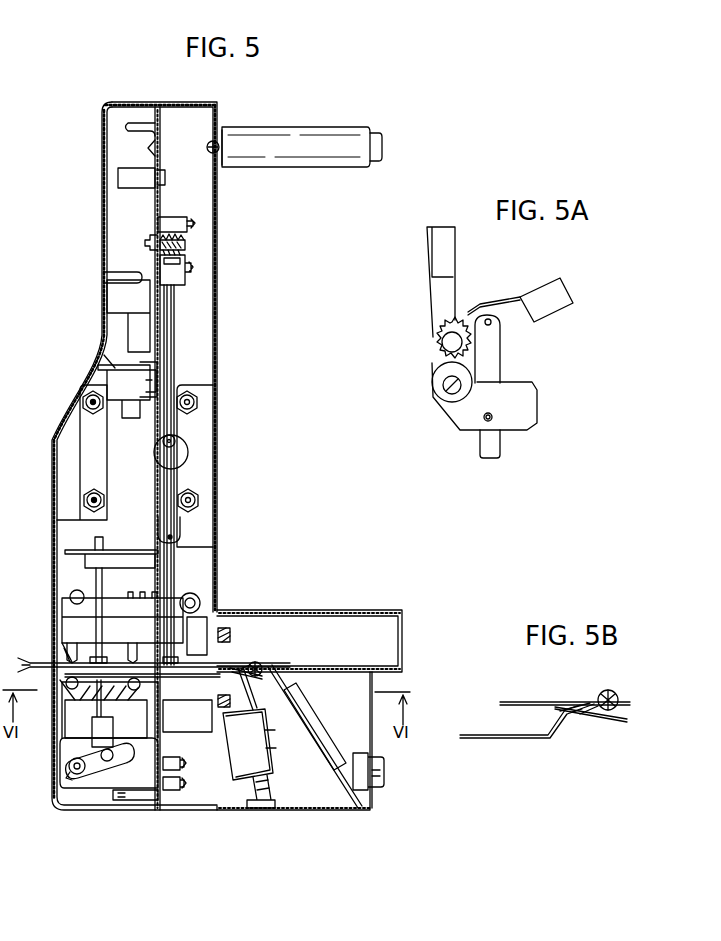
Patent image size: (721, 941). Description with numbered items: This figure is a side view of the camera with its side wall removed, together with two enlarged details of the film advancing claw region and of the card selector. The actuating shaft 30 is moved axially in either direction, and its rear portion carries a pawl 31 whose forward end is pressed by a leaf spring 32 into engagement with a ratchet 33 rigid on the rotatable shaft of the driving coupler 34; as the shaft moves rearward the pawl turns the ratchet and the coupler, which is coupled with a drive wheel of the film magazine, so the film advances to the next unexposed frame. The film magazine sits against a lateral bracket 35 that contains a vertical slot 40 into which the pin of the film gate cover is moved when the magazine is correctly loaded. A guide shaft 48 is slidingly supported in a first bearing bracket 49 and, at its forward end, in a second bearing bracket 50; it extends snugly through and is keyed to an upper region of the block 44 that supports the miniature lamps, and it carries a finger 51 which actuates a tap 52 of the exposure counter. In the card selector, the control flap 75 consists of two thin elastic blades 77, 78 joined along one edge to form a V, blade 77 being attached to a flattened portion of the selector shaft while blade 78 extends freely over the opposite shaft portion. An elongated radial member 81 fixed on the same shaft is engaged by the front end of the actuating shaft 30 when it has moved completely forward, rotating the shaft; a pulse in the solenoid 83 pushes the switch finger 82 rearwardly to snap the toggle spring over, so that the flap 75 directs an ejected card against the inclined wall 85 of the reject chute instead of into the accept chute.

In FIG. 5, the actuating shaft 30 is at (175, 337).
In FIG. 5A, the actuating shaft 30 is at (505, 448).
In FIG. 5A, the pawl 31 is at (488, 326).
In FIG. 5, the leaf spring 32 is at (176, 220).
In FIG. 5A, the leaf spring 32 is at (497, 302).
In FIG. 5, the ratchet 33 is at (186, 240).
In FIG. 5A, the ratchet 33 is at (433, 337).
In FIG. 5, the driving coupler 34 is at (150, 240).
In FIG. 5, the lateral bracket 35 is at (112, 300).
In FIG. 5, the vertical slot 40 is at (104, 277).
In FIG. 5, the block 44 is at (68, 630).
In FIG. 5, the guide shaft 48 is at (85, 580).
In FIG. 5, the first bearing bracket 49 is at (125, 560).
In FIG. 5, the second bearing bracket 50 is at (75, 730).
In FIG. 5, the finger 51 is at (108, 728).
In FIG. 5, the tap 52 is at (122, 756).
In FIG. 5, the control flap 75 is at (250, 669).
In FIG. 5B, the control flap 75 is at (573, 702).
In FIG. 5, the blade 77 is at (258, 663).
In FIG. 5B, the blade 77 is at (508, 702).
In FIG. 5, the blade 78 is at (262, 676).
In FIG. 5B, the blade 78 is at (622, 720).
In FIG. 5, the elongated radial member 81 is at (185, 694).
In FIG. 5B, the elongated radial member 81 is at (492, 738).
In FIG. 5, the switch finger 82 is at (255, 672).
In FIG. 5B, the switch finger 82 is at (573, 713).
In FIG. 5, the solenoid 83 is at (273, 765).
In FIG. 5, the inclined wall 85 is at (318, 712).